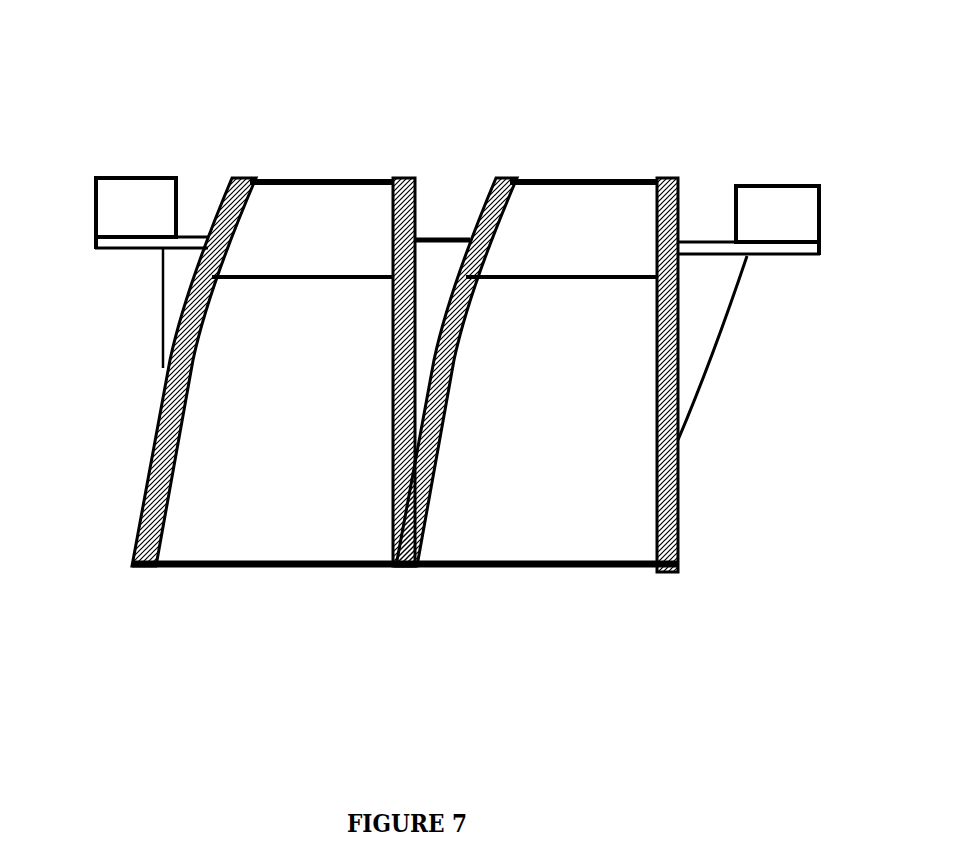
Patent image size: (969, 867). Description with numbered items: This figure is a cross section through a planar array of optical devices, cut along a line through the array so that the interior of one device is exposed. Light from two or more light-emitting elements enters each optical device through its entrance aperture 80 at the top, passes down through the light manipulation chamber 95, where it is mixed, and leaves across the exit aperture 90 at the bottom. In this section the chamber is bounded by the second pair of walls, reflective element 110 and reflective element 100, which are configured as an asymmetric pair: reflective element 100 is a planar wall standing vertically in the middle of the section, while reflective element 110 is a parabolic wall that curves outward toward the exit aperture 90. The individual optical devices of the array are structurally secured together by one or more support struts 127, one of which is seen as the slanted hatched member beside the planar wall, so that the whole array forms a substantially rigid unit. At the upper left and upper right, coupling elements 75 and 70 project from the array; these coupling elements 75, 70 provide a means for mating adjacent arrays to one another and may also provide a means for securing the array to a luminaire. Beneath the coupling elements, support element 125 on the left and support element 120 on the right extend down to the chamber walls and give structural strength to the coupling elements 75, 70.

The coupling element 70 is at (775, 182).
The coupling element 75 is at (100, 154).
The entrance aperture 80 is at (313, 166).
The exit aperture 90 is at (276, 578).
The light manipulation chamber 95 is at (238, 437).
The reflective element 100 is at (414, 176).
The reflective element 110 is at (133, 467).
The support element 120 is at (737, 333).
The support element 125 is at (147, 297).
The support strut 127 is at (446, 228).